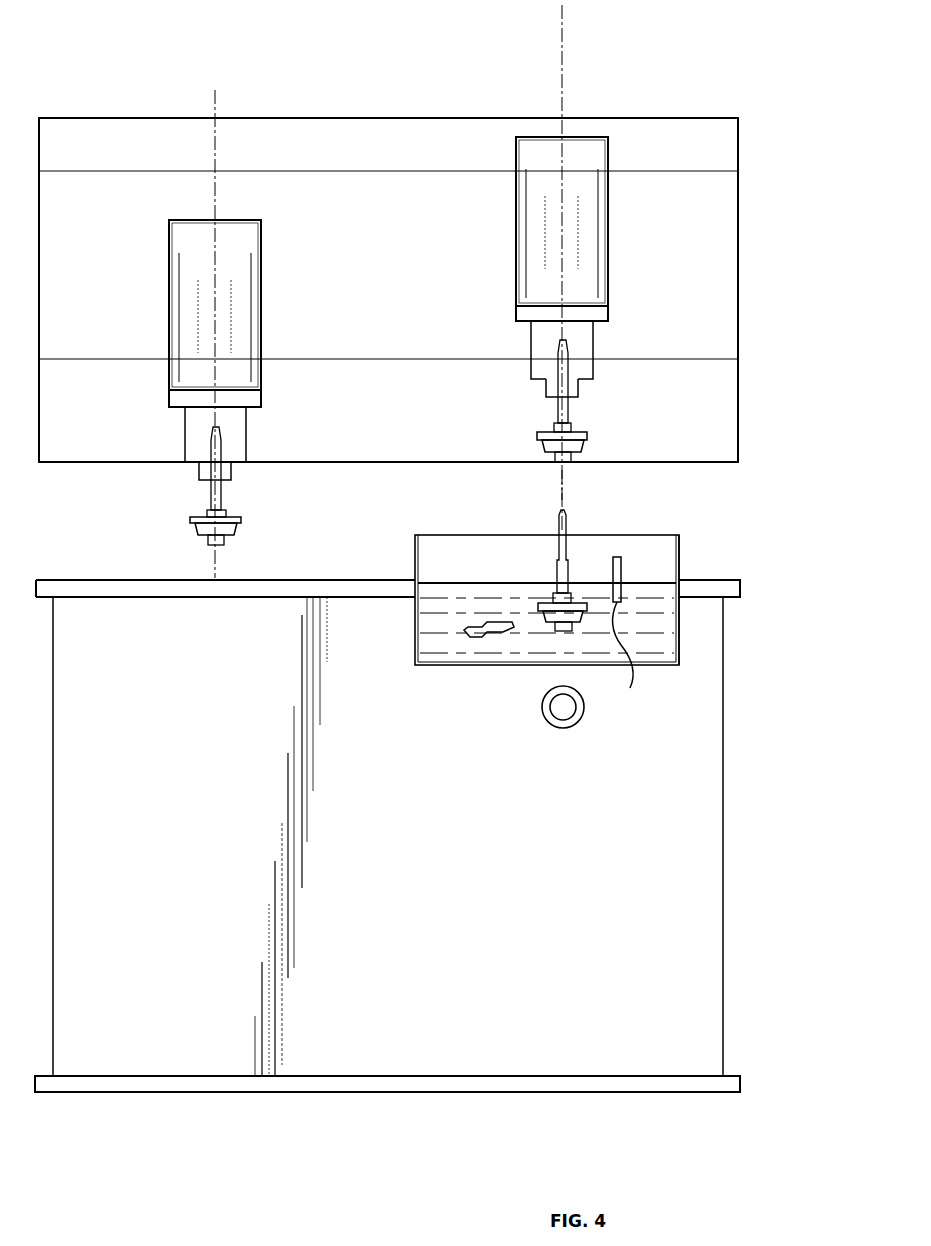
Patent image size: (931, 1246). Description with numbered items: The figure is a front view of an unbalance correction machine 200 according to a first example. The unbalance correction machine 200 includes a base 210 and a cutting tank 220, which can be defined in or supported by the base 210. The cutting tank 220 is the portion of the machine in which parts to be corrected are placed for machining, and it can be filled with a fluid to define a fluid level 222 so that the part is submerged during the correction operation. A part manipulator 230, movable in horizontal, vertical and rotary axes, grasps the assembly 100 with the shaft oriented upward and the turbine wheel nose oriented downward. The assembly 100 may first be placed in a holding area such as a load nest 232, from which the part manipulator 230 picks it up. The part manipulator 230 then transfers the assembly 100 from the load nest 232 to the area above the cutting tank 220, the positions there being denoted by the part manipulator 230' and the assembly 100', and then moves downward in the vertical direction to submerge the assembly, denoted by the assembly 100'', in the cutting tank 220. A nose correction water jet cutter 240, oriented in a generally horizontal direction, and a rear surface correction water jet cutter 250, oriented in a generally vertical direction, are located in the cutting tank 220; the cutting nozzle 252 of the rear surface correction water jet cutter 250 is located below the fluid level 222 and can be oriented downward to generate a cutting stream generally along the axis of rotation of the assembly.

The unbalance correction machine 200 is at (96, 106).
The base 210 is at (723, 812).
The cutting tank 220 is at (680, 640).
The fluid level 222 is at (662, 583).
The part manipulator 230 is at (259, 334).
The part manipulator 230' is at (581, 252).
The load nest 232 is at (204, 568).
The nose correction water jet cutter 240 is at (469, 636).
The rear surface correction water jet cutter 250 is at (621, 555).
The cutting nozzle 252 is at (628, 658).
The assembly 100 is at (269, 534).
The assembly 100' is at (605, 423).
The assembly 100'' is at (526, 550).